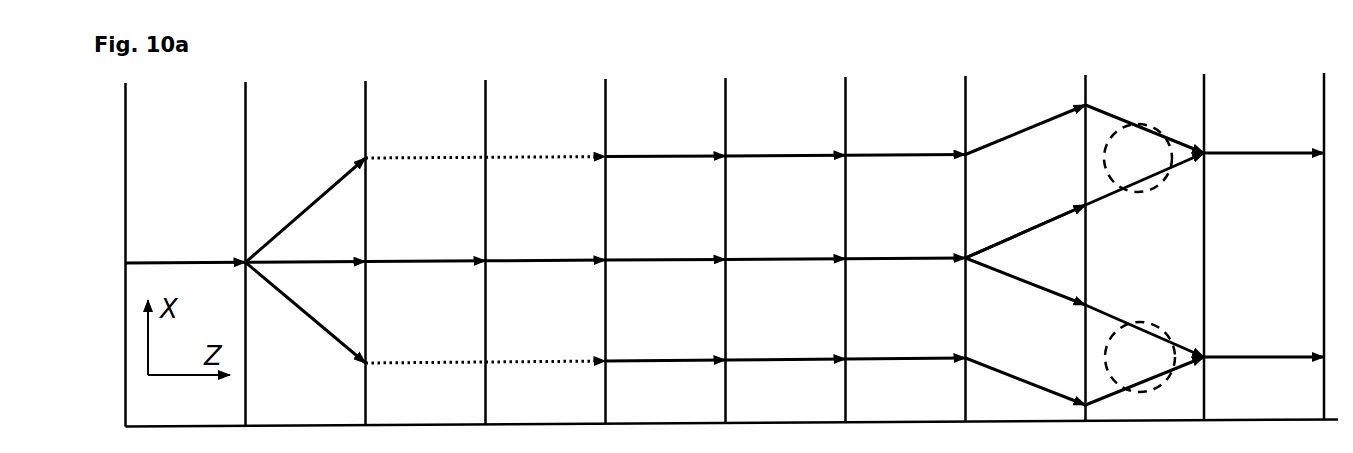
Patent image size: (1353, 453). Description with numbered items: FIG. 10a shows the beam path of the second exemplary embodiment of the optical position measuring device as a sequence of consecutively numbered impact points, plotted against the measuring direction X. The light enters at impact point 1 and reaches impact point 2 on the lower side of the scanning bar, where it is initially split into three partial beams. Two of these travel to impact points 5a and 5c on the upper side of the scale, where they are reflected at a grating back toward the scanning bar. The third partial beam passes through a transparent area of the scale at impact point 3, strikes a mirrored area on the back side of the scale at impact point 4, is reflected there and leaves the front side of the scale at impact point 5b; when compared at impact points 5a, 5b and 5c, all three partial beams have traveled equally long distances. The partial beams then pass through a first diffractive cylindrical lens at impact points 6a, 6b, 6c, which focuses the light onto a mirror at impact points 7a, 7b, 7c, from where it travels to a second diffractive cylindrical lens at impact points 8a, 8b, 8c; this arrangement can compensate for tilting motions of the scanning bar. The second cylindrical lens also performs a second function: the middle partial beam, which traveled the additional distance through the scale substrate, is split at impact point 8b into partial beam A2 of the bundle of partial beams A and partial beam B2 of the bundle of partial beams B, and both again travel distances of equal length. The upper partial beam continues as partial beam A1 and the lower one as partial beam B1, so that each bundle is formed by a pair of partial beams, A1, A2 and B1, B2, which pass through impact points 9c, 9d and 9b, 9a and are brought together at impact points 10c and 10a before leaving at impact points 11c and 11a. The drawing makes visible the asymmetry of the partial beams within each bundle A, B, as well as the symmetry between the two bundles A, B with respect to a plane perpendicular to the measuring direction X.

The laser source position 1 is at (186, 250).
The impact point 2 is at (292, 260).
The impact point 3 is at (412, 249).
The impact point 4 is at (534, 247).
The impact point 5a is at (487, 377).
The impact point 5b is at (653, 246).
The impact point 5c is at (486, 143).
The impact point 6a is at (666, 376).
The impact point 6b is at (773, 245).
The impact point 6c is at (666, 142).
The impact point 7a is at (786, 375).
The impact point 7b is at (894, 245).
The impact point 7c is at (786, 141).
The impact point 8a is at (906, 373).
The impact point 8b is at (1013, 231).
The impact point 8c is at (906, 140).
The deflected partial beam position 9a is at (1131, 381).
The deflected partial beam position 9b is at (1131, 331).
The deflected partial beam position 9c is at (1131, 116).
The deflected partial beam position 9d is at (1131, 179).
The combined beam position 10a is at (1234, 342).
The combined beam position 10c is at (1234, 140).
The output beam position 11a is at (1294, 342).
The output beam position 11c is at (1294, 140).
The bundle of partial beams A is at (1150, 123).
The upper partial beam path A1 is at (992, 143).
The partial beam A2 is at (989, 247).
The bundle of partial beams B is at (1152, 396).
The lower partial beam path B1 is at (989, 370).
The partial beam B2 is at (991, 269).